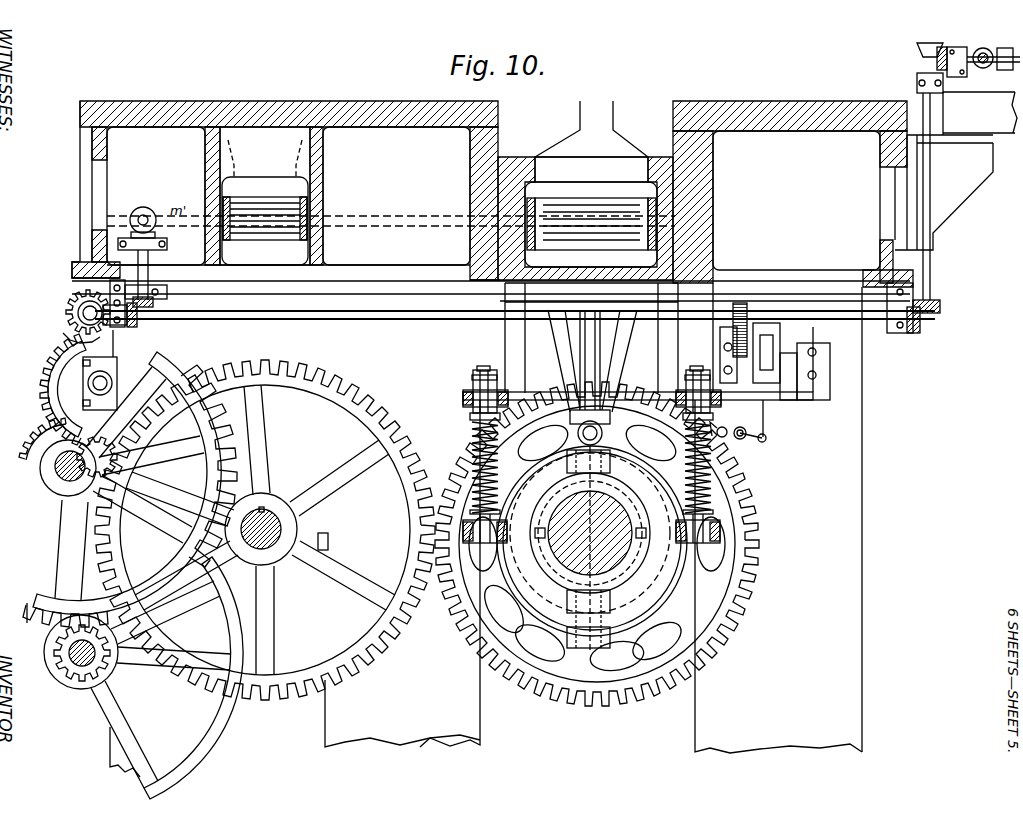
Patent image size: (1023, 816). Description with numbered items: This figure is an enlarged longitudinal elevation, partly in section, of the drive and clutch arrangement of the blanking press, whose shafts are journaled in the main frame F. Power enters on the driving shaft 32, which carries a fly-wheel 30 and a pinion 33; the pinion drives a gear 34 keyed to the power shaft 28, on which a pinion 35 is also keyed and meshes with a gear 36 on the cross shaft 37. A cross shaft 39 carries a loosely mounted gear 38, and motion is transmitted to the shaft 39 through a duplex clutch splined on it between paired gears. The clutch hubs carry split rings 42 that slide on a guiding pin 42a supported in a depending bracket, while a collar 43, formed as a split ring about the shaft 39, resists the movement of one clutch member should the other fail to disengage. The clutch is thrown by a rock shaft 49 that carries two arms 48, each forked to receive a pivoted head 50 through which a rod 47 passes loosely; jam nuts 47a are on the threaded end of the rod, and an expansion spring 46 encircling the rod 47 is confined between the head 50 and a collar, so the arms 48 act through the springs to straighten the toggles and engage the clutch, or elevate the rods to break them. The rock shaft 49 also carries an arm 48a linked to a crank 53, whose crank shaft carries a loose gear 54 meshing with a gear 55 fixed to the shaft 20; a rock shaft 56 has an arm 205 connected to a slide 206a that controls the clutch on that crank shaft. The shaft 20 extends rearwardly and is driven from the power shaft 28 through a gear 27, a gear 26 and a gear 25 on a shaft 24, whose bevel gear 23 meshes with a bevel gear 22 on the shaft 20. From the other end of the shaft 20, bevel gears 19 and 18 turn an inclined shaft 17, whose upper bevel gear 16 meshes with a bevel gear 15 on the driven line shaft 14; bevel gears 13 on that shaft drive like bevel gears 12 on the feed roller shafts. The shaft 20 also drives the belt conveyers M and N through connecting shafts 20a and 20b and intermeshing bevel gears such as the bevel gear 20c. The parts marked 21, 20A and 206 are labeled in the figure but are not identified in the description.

The bevel gear 12 is at (985, 48).
The bevel gear 13 is at (1006, 48).
The driven line shaft 14 is at (963, 50).
The bevel gear 15 is at (942, 47).
The bevel gear 16 is at (925, 43).
The inclined shaft 17 is at (921, 100).
The bevel gear 18 is at (935, 312).
The bevel gear 19 is at (917, 328).
The shaft 20 is at (402, 322).
The connecting shaft 20a is at (132, 214).
The connecting shaft 20b is at (140, 214).
The bevel gear 20c is at (155, 302).
The stop 20A is at (727, 426).
The bearing bracket 21 is at (135, 325).
The bevel gear 22 is at (114, 340).
The bevel gear 23 is at (70, 300).
The shaft 24 is at (78, 318).
The gear 25 is at (72, 336).
The gear 26 is at (50, 366).
The gear 27 is at (36, 437).
The power shaft 28 is at (55, 467).
The fly-wheel 30 is at (210, 742).
The driving shaft 32 is at (74, 672).
The pinion 33 is at (56, 657).
The gear 34 is at (36, 628).
The pinion 35 is at (94, 456).
The gear 36 is at (231, 526).
The cross shaft 37 is at (268, 520).
The gear 38 is at (597, 544).
The cross shaft 39 is at (630, 518).
The split rings 42 is at (660, 585).
The guiding pin 42a is at (603, 433).
The collar 43 is at (622, 570).
The expansion spring 46 is at (712, 510).
The rod 47 is at (477, 369).
The jam nuts 47a is at (472, 378).
The arms 48 is at (463, 402).
The arm 48a is at (790, 400).
The rock shaft 49 is at (545, 400).
The pivoted head 50 is at (508, 360).
The crank 53 is at (770, 340).
The gear 54 is at (720, 345).
The gear 55 is at (747, 308).
The rock shaft 56 is at (742, 440).
The arm 205 is at (767, 437).
The rod 206 is at (764, 418).
The slide 206a is at (800, 343).
The belt conveyer M is at (620, 192).
The belt conveyer N is at (276, 192).
The main frame F is at (593, 520).